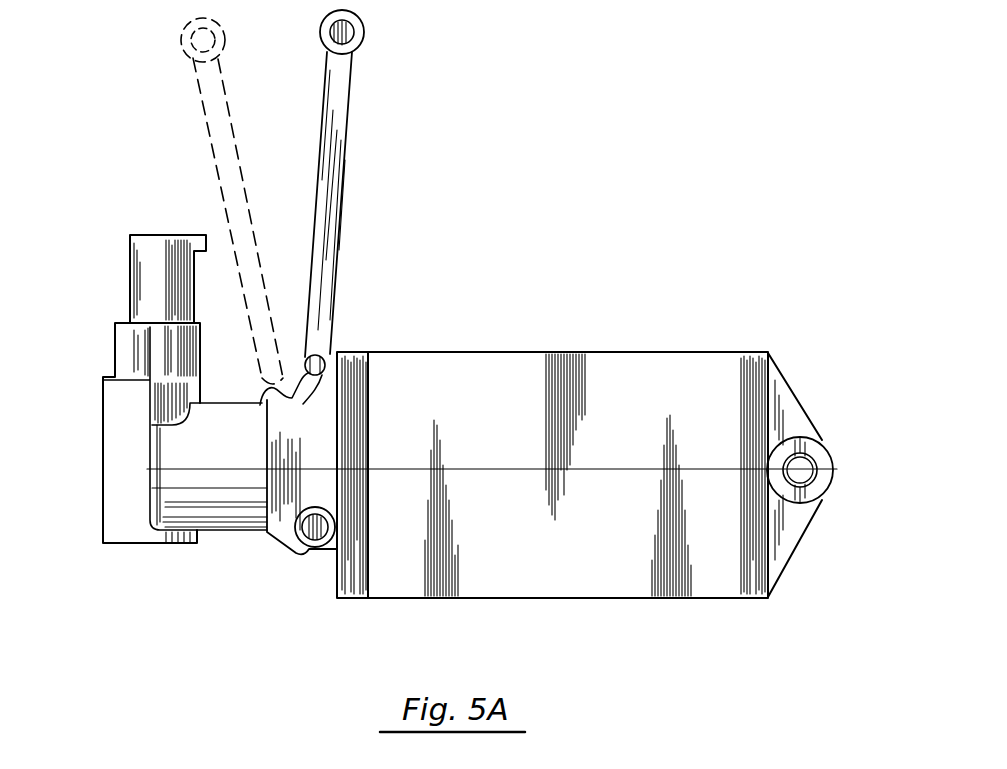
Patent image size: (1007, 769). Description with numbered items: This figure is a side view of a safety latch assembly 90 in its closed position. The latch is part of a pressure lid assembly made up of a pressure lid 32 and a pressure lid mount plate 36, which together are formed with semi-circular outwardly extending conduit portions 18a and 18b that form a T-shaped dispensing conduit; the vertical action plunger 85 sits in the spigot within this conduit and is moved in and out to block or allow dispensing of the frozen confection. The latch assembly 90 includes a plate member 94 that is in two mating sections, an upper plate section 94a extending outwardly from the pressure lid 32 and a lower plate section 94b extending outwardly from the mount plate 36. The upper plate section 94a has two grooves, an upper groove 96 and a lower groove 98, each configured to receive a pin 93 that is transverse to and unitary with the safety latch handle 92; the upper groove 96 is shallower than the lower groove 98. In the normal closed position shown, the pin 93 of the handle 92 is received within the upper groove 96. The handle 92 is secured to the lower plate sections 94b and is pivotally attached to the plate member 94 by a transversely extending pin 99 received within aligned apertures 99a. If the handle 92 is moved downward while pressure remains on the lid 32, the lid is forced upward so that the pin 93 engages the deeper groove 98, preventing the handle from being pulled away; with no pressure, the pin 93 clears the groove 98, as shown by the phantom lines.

The vertical action plunger 85 is at (158, 237).
The upper conduit portion 18a is at (215, 447).
The lower conduit portion 18b is at (218, 500).
The lower groove 98 is at (265, 390).
The plate member 94 is at (325, 395).
The upper plate section 94a is at (320, 437).
The lower plate section 94b is at (282, 498).
The upper groove 96 is at (297, 404).
The pin 93 is at (318, 355).
The safety latch assembly 90 is at (387, 192).
The safety latch handle 92 is at (362, 42).
The pin 99 is at (318, 547).
The apertures 99a is at (337, 527).
The pressure lid 32 is at (625, 395).
The pressure lid mount plate 36 is at (572, 560).